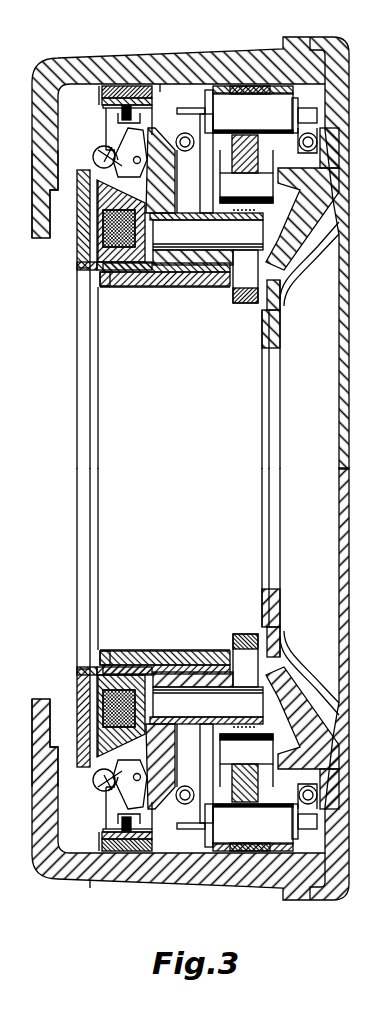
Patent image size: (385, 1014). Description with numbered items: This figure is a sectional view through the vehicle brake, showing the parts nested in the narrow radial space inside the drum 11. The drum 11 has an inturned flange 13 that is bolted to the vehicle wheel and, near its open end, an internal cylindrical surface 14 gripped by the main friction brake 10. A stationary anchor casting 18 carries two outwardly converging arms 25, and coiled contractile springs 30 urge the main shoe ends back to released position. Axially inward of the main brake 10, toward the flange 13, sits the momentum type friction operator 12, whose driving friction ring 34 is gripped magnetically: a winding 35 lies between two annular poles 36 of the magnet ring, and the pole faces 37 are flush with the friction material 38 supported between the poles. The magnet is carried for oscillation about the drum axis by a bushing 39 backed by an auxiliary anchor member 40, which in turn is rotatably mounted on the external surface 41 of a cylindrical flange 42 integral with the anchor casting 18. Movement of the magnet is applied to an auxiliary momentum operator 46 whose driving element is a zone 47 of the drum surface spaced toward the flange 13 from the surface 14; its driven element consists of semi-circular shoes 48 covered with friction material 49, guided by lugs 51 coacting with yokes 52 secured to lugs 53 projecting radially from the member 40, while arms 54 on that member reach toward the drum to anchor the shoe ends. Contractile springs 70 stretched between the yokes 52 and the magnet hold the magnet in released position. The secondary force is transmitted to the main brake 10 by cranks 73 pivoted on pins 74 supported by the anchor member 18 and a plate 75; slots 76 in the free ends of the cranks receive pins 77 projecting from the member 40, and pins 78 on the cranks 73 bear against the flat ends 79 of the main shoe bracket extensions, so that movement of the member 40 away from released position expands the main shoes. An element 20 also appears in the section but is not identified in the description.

The main friction brake 10 is at (232, 882).
The drum 11 is at (133, 882).
The momentum type friction operator 12 is at (128, 656).
The inturned flange 13 is at (40, 727).
The internal cylindrical surface 14 is at (302, 92).
The anchor casting 18 is at (302, 468).
The inner wall 20 is at (282, 616).
The outwardly converging arms 25 is at (300, 99).
The coiled contractile springs 30 is at (180, 136).
The driving friction ring 34 is at (84, 252).
The winding 35 is at (102, 226).
The annular poles 36 is at (80, 188).
The pole faces 37 is at (88, 264).
The friction material 38 is at (97, 240).
The bushing 39 is at (127, 282).
The auxiliary anchor member 40 is at (166, 274).
The external surface 41 is at (198, 280).
The cylindrical flange 42 is at (166, 648).
The auxiliary momentum operator 46 is at (97, 86).
The zone of the internal drum surface 47 is at (80, 884).
The semi-circular shoes 48 is at (100, 110).
The friction material 49 is at (102, 96).
The lugs 51 is at (130, 471).
The yokes 52 is at (116, 132).
The lugs 53 is at (175, 768).
The arms 54 is at (204, 178).
The contractile springs 70 is at (94, 160).
The cranks 73 is at (238, 302).
The pins 74 is at (223, 108).
The plate 75 is at (222, 93).
The slots 76 is at (278, 284).
The pins 77 is at (247, 251).
The pins 78 is at (268, 190).
The flat ends 79 is at (232, 168).